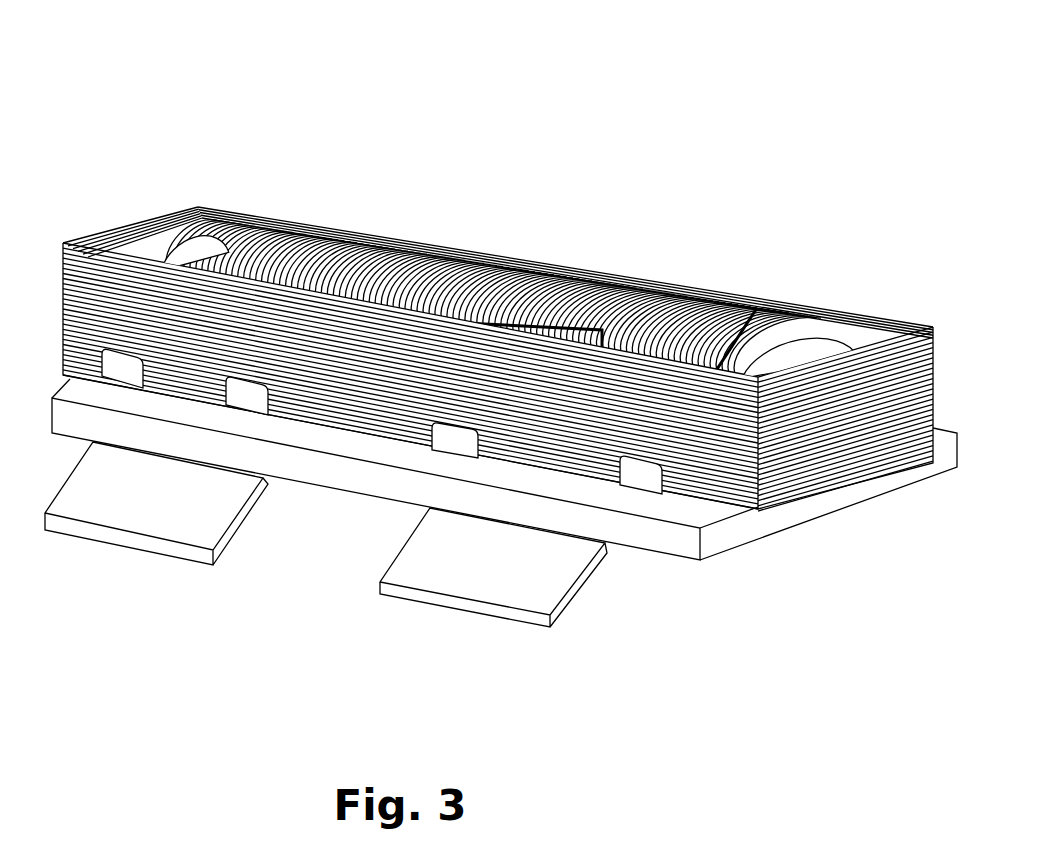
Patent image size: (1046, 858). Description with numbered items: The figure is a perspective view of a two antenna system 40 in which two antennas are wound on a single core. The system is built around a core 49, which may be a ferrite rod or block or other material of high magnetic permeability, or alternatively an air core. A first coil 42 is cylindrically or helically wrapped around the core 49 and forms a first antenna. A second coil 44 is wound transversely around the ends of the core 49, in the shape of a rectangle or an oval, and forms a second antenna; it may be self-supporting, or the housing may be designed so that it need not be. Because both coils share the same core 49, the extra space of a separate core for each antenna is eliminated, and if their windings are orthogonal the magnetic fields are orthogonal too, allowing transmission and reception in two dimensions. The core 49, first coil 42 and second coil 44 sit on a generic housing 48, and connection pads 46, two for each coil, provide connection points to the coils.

The two antenna system 40 is at (440, 66).
The first coil 42 is at (335, 252).
The second coil 44 is at (537, 260).
The connection pads 46 is at (407, 597).
The housing 48 is at (676, 558).
The core 49 is at (188, 232).